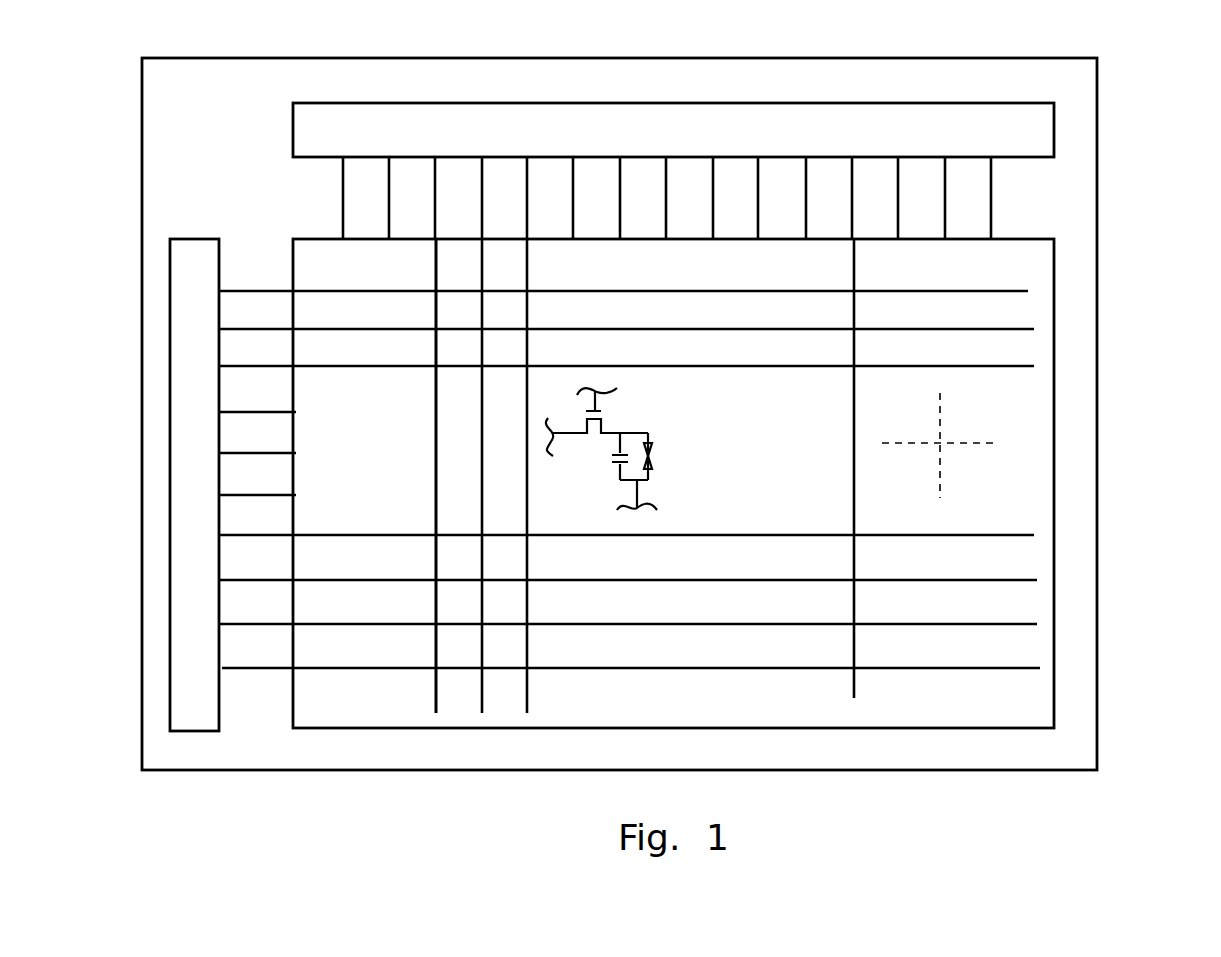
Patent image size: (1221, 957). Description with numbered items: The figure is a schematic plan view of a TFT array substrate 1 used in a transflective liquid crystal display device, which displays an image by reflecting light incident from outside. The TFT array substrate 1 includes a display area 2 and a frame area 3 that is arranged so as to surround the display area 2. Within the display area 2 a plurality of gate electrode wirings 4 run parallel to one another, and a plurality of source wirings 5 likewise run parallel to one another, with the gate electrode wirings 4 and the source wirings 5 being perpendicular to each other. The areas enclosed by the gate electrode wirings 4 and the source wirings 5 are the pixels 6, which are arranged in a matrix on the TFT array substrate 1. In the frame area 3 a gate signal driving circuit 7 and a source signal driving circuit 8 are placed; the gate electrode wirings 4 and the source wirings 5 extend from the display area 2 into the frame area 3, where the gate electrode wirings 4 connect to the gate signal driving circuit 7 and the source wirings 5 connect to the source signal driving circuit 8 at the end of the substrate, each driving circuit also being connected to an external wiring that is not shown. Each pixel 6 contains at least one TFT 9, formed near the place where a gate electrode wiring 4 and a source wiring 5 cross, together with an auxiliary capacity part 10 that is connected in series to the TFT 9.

The TFT array substrate 1 is at (1098, 463).
The display area 2 is at (1054, 289).
The frame area 3 is at (268, 722).
The gate electrode wirings 4 is at (357, 670).
The source wirings 5 is at (343, 210).
The pixels 6 is at (445, 350).
The gate signal driving circuit 7 is at (188, 731).
The source signal driving circuit 8 is at (1054, 114).
The TFT 9 is at (607, 418).
The auxiliary capacity part 10 is at (656, 450).